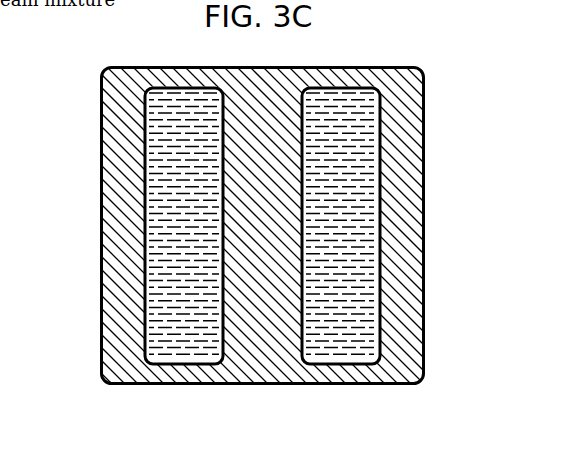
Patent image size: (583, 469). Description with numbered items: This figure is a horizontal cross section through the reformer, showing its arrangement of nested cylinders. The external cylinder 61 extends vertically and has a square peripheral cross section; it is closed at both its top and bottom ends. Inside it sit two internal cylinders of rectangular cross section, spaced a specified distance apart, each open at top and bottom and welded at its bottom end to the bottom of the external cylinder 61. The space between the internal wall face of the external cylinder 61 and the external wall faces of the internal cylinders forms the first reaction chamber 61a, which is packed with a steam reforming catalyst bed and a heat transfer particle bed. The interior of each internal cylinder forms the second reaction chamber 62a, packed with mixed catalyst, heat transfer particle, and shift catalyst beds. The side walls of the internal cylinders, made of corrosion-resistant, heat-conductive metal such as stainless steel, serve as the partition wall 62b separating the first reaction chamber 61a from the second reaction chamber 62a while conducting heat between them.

The external cylinder 61 is at (426, 182).
The first reaction chamber 61a is at (127, 343).
The second reaction chamber 62a is at (186, 104).
The partition wall 62b is at (400, 214).